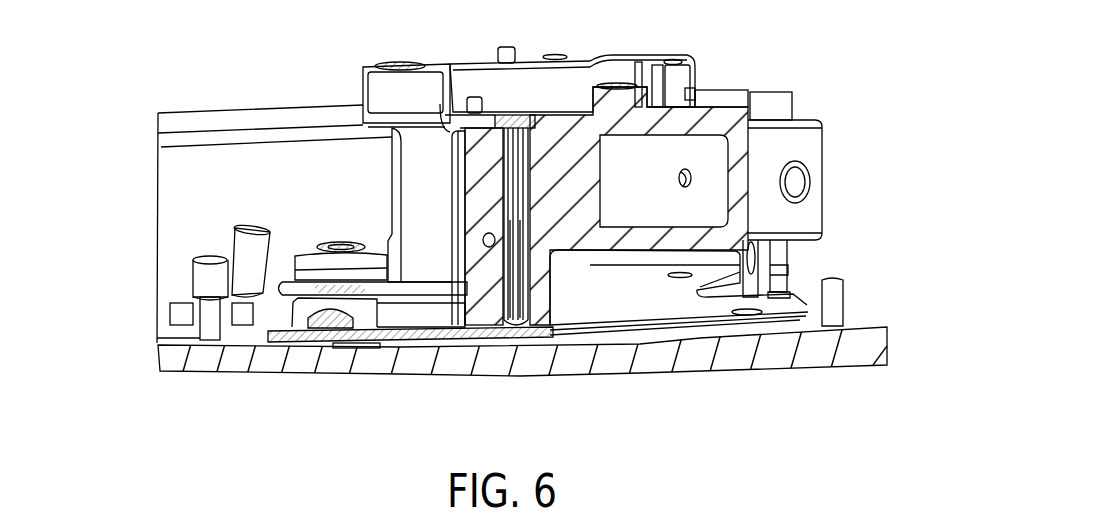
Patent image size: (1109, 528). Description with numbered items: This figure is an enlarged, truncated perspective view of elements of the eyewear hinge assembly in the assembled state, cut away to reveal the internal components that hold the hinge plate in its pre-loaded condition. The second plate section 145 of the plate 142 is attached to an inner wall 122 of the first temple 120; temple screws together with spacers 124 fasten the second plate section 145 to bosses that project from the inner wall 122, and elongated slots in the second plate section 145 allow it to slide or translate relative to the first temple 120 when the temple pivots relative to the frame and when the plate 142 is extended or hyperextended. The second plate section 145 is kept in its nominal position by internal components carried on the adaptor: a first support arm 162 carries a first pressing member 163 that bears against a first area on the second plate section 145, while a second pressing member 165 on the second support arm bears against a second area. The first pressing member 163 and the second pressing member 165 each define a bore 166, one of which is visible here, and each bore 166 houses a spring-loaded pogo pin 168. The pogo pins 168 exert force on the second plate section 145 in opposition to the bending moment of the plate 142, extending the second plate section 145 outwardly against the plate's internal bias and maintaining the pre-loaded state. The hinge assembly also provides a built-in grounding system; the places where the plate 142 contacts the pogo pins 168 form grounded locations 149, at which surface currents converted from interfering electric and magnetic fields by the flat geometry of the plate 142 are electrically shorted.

The first temple 120 is at (315, 360).
The inner wall 122 is at (588, 343).
The spacer 124 is at (315, 262).
The plate 142 is at (642, 310).
The second plate section 145 is at (303, 337).
The grounded location 149 is at (353, 343).
The first support arm 162 is at (712, 122).
The first pressing member 163 is at (463, 267).
The second pressing member 165 is at (423, 182).
The bore 166 is at (527, 148).
The pogo pin 168 is at (520, 318).